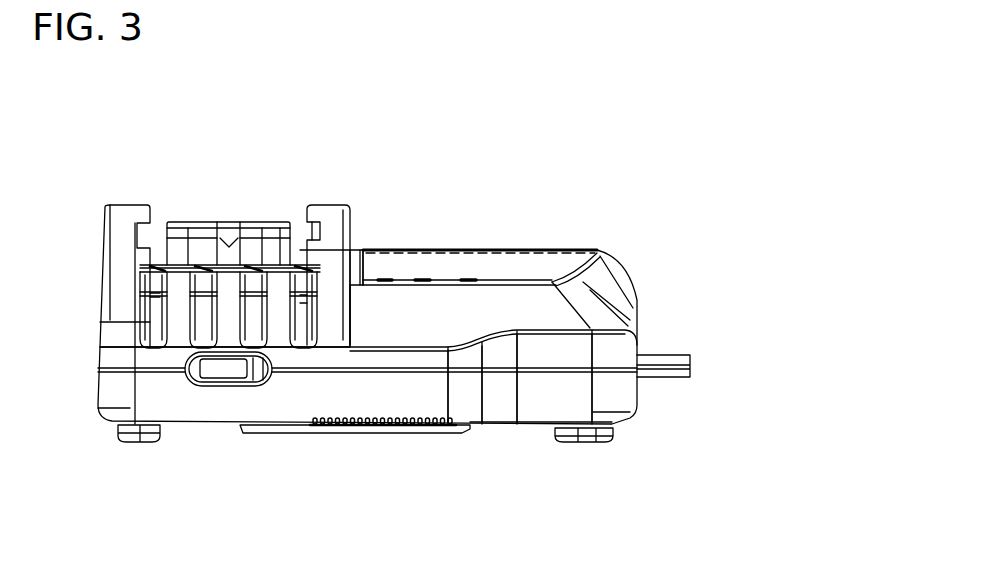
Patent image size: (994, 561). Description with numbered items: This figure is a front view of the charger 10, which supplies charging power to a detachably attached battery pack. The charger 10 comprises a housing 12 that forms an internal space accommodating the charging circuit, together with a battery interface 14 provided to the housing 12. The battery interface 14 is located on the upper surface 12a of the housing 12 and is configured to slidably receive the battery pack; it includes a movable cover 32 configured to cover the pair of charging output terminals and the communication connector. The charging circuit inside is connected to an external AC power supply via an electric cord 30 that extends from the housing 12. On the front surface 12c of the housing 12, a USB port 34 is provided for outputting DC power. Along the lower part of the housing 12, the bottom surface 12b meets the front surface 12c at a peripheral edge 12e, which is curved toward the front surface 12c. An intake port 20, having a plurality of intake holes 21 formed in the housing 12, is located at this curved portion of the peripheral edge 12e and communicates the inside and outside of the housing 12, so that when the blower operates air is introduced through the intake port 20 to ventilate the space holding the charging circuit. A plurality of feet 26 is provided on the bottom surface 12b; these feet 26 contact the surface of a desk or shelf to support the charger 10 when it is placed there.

The charger 10 is at (656, 136).
The housing 12 is at (621, 269).
The upper surface 12a is at (430, 259).
The bottom surface 12b is at (545, 430).
The front surface 12c is at (535, 396).
The peripheral edge 12e is at (470, 423).
The battery interface 14 is at (165, 187).
The intake port 20 is at (452, 438).
The intake holes 21 is at (306, 430).
The feet 26 is at (134, 441).
The electric cord 30 is at (673, 353).
The movable cover 32 is at (229, 222).
The USB port 34 is at (228, 387).